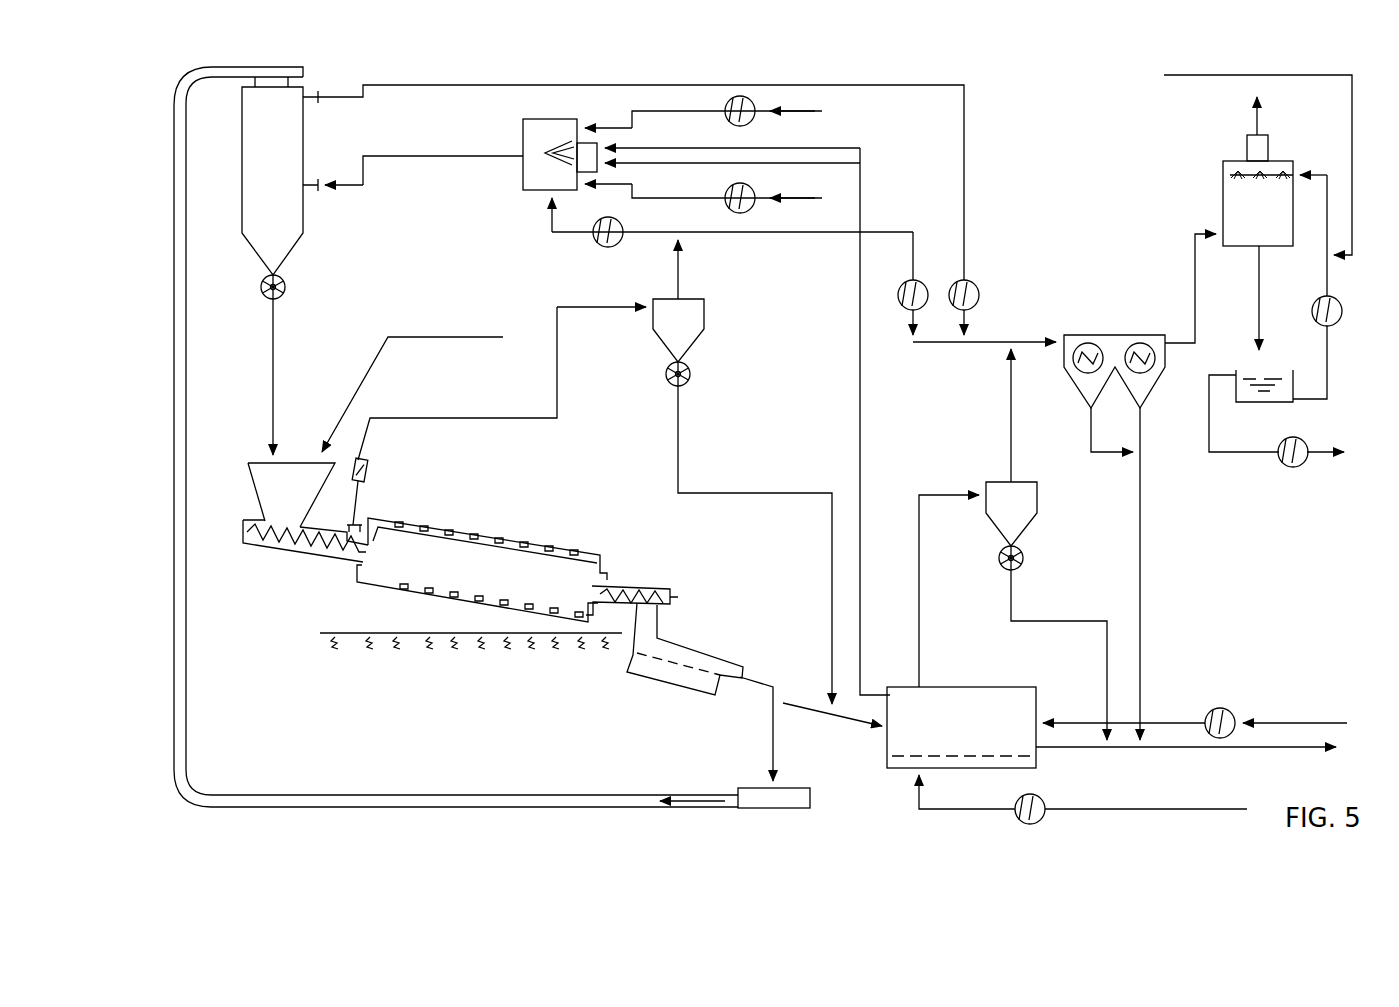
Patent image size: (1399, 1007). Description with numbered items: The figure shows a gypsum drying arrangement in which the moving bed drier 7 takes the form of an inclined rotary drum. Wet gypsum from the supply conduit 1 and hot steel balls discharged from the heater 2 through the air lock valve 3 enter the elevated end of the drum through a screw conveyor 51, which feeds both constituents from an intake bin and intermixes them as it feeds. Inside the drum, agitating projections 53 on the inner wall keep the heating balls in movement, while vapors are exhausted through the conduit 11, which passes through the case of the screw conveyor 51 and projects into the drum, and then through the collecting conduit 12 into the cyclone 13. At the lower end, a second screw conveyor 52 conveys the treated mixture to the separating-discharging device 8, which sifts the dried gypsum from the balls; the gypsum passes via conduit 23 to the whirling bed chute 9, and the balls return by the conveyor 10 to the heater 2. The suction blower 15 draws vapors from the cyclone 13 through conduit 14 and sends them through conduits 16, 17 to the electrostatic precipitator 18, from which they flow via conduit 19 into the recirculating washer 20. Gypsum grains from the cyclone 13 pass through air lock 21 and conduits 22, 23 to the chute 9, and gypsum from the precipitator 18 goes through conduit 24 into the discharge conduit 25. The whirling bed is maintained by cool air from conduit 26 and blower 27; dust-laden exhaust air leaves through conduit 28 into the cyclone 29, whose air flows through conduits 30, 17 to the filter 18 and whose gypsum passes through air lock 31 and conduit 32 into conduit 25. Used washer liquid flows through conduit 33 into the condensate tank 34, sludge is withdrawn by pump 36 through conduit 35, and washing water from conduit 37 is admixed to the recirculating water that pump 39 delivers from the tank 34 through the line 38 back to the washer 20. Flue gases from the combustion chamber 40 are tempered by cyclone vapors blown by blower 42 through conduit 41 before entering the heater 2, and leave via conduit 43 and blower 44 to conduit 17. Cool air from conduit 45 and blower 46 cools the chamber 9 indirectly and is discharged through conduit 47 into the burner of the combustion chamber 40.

The supply conduit 1 is at (424, 333).
The heater 2 is at (305, 149).
The air lock valve 3 is at (286, 283).
The moving bed drier 7 is at (490, 531).
The separating-discharging device 8 is at (663, 689).
The whirling bed chute 9 is at (968, 770).
The conveyor 10 is at (188, 698).
The branch conduit 11 is at (366, 451).
The collecting conduit 12 is at (558, 395).
The cyclone 13 is at (705, 327).
The conduit 14 is at (870, 232).
The suction blower 15 is at (906, 285).
The conduit 16 is at (948, 345).
The conduit 17 is at (1000, 340).
The electrostatic precipitator 18 is at (1110, 333).
The conduit 19 is at (1209, 295).
The recirculating washer 20 is at (1222, 200).
The air lock 21 is at (692, 380).
The conduit 22 is at (745, 494).
The conduit 23 is at (846, 726).
The conduit 24 is at (1142, 553).
The discharge conduit 25 is at (1258, 748).
The conduit 26 is at (1152, 808).
The blower 27 is at (1045, 798).
The conduit 28 is at (922, 631).
The cyclone 29 is at (1038, 509).
The conduit 30 is at (1010, 435).
The air lock 31 is at (1025, 559).
The conduit 32 is at (1070, 625).
The conduit 33 is at (1263, 296).
The condensate tank 34 is at (1259, 404).
The conduit 35 is at (1256, 454).
The pump 36 is at (1292, 458).
The conduit 37 is at (1351, 125).
The line 38 is at (1329, 388).
The pump 39 is at (1343, 290).
The combustion chamber 40 is at (518, 146).
The conduit 41 is at (664, 243).
The blower 42 is at (611, 247).
The conduit 43 is at (967, 131).
The blower 44 is at (980, 291).
The conduit 45 is at (1288, 722).
The blower 46 is at (1222, 708).
The conduit 47 is at (852, 437).
The screw conveyor 51 is at (293, 555).
The screw conveyor 52 is at (637, 578).
The agitating projections 53 is at (420, 596).